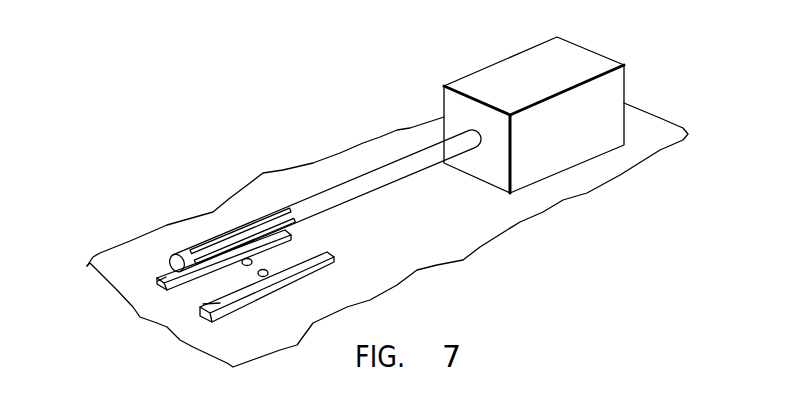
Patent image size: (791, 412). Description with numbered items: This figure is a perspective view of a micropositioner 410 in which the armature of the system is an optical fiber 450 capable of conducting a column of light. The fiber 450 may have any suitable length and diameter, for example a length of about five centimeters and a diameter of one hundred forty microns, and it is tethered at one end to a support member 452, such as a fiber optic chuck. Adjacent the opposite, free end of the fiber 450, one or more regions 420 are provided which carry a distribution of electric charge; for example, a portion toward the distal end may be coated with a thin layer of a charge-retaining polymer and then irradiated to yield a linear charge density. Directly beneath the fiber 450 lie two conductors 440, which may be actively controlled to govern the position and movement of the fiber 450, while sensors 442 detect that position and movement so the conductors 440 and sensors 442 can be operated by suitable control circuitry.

The micropositioner 410 is at (222, 107).
The regions 420 is at (222, 251).
The conductors 440 is at (200, 306).
The sensors 442 is at (252, 260).
The optical fiber 450 is at (368, 178).
The support member 452 is at (517, 70).